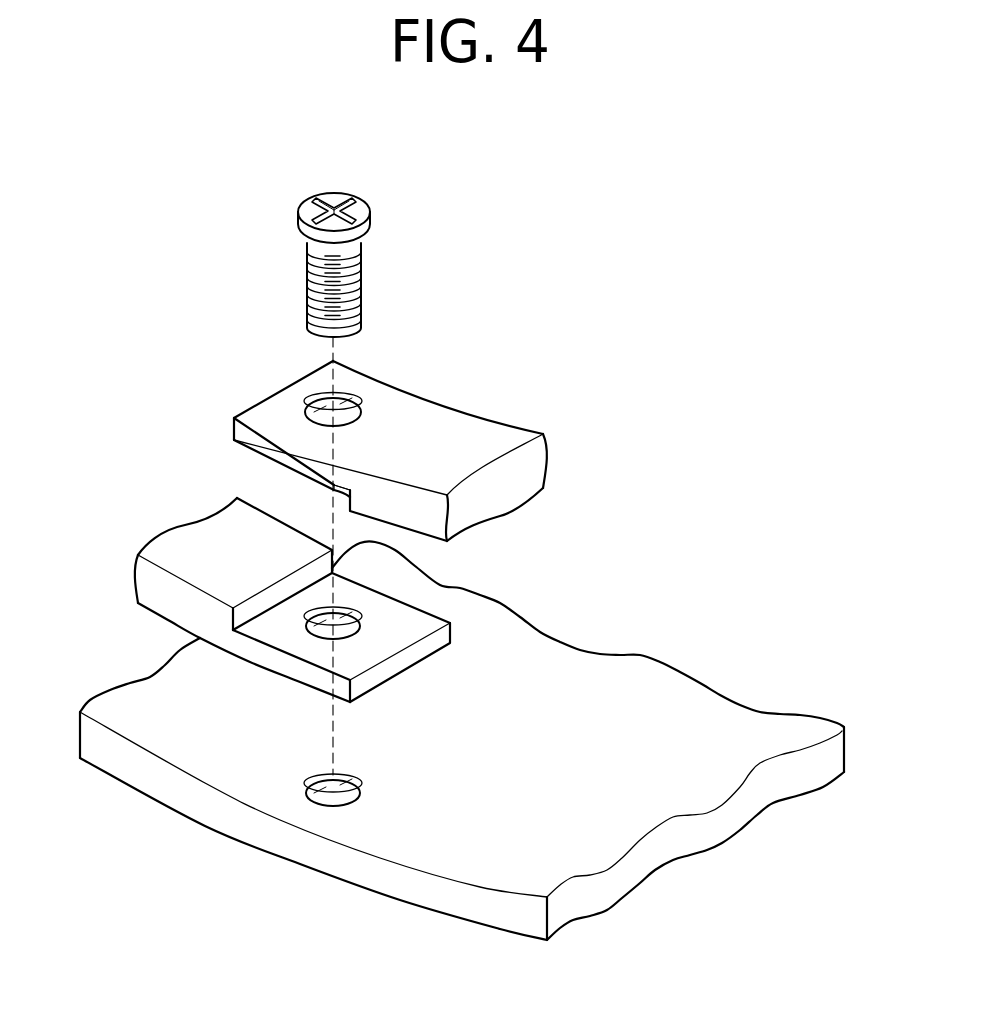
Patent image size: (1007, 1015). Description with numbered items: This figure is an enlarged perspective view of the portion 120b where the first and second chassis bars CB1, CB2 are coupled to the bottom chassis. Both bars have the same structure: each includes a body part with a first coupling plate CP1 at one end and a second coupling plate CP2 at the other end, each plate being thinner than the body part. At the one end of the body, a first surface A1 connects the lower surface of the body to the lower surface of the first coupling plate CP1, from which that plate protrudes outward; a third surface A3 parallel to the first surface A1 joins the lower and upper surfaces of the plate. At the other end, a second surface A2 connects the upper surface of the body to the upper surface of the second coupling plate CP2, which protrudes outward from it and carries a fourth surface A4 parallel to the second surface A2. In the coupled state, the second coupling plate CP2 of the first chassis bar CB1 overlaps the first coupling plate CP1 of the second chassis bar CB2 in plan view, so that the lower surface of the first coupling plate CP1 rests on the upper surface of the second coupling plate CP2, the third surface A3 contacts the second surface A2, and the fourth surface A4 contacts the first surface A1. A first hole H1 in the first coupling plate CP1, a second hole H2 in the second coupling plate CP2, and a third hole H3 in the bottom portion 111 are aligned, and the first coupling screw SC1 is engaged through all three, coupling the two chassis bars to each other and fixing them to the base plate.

The fixing structure 120b is at (667, 267).
The first coupling screw SC1 is at (370, 223).
The second chassis bar CB2 is at (522, 425).
The first coupling plate CP1 is at (282, 412).
The third surface A3 is at (312, 373).
The first surface A1 is at (327, 486).
The first hole H1 is at (345, 418).
The first chassis bar CB1 is at (210, 518).
The second surface A2 is at (246, 611).
The second coupling plate CP2 is at (317, 650).
The fourth surface A4 is at (390, 668).
The second hole H2 is at (348, 628).
The bottom portion 111 is at (197, 798).
The third hole H3 is at (310, 783).